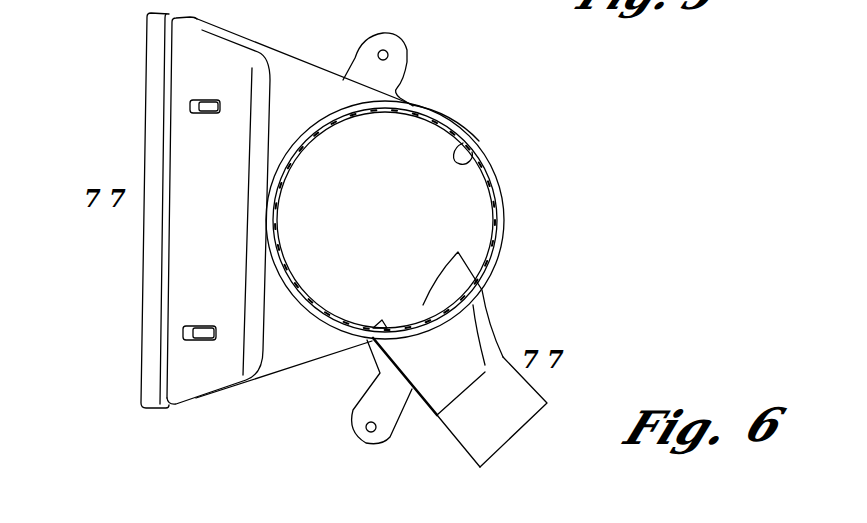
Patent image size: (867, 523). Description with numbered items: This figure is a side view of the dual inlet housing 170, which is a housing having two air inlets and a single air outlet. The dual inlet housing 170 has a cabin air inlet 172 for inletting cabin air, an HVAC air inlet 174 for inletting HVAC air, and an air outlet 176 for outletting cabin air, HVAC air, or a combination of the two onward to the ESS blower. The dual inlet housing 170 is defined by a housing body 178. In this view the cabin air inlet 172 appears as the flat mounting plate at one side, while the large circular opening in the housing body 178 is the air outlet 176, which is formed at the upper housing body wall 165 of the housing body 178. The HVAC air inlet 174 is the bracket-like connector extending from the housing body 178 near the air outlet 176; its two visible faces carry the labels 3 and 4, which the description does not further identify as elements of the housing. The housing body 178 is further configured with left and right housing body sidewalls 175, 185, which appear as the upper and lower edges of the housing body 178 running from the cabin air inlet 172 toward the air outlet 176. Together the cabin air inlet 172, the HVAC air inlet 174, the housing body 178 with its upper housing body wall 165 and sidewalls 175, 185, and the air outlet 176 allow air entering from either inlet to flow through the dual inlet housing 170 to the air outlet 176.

The dual inlet housing 170 is at (535, 178).
The cabin air inlet 172 is at (145, 121).
The HVAC air inlet 174 is at (461, 379).
The left housing body sidewall 175 is at (298, 58).
The air outlet 176 is at (463, 143).
The housing body 178 is at (455, 108).
The upper housing body wall 165 is at (302, 82).
The right housing body sidewall 185 is at (313, 363).
The connector face 3 is at (519, 412).
The connector face 4 is at (518, 432).